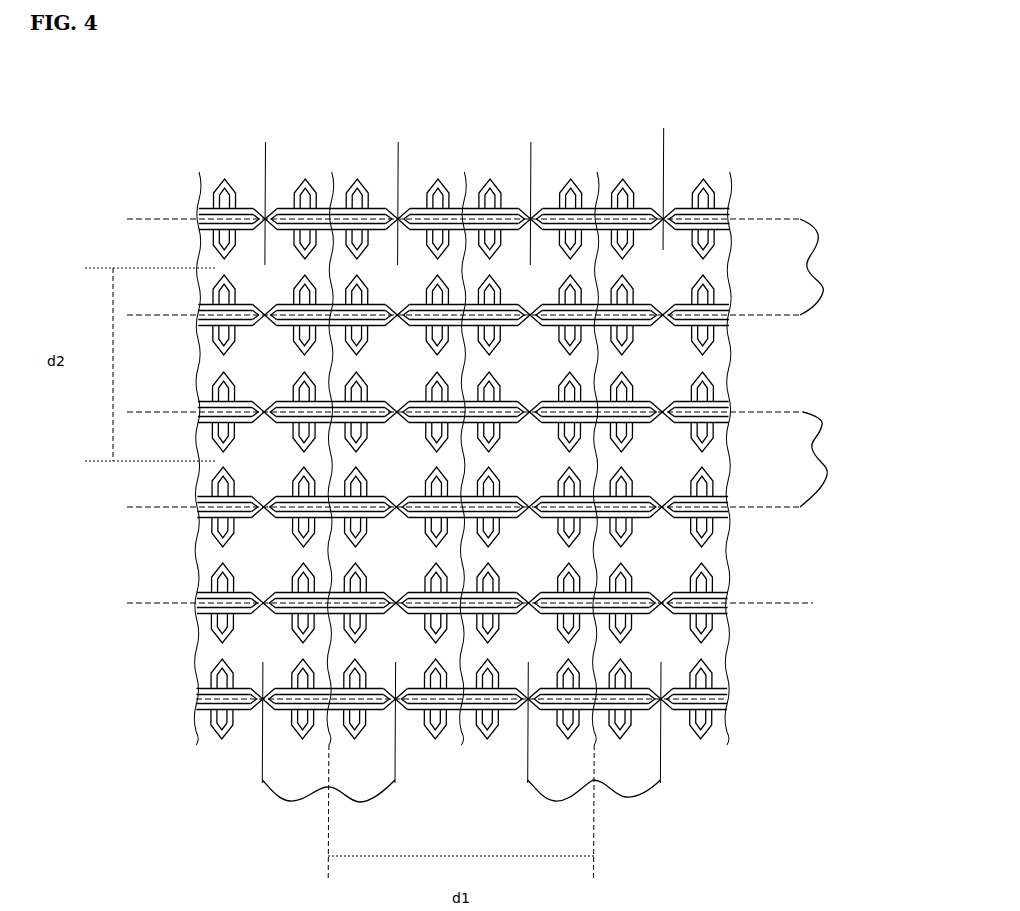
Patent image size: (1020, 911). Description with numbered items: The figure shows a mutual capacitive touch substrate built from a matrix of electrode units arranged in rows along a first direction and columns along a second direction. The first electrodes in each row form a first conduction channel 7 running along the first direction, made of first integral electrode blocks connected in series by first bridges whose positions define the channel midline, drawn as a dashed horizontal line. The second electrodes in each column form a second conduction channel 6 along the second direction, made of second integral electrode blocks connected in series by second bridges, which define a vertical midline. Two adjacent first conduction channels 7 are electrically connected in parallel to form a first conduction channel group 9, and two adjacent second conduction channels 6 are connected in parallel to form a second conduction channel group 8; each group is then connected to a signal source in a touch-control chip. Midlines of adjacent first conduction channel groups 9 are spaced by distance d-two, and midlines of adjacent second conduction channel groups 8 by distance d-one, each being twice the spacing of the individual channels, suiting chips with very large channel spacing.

The second conduction channel 6 is at (664, 128).
The first conduction channel 7 is at (127, 603).
The second conduction channel group 8 is at (758, 835).
The first conduction channel group 9 is at (895, 510).